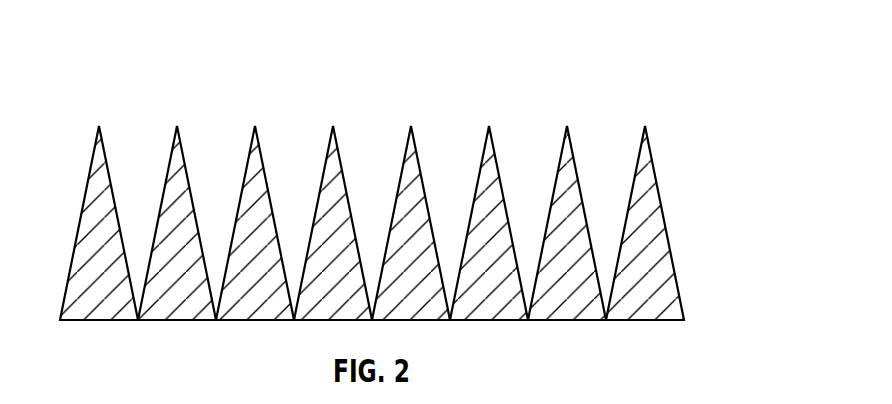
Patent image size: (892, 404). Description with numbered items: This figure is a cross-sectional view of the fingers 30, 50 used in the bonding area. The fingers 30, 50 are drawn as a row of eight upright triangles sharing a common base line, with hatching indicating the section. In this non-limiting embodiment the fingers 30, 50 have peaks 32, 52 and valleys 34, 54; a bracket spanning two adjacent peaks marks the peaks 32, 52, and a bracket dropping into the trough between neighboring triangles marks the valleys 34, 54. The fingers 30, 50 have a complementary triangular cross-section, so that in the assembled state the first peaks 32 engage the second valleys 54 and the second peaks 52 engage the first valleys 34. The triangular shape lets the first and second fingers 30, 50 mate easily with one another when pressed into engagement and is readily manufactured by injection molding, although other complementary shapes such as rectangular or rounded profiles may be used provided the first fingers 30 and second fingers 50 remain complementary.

The first fingers 30 is at (416, 173).
The second fingers 50 is at (660, 167).
The first peaks 32 is at (138, 173).
The second peaks 52 is at (177, 132).
The first valleys 34 is at (332, 181).
The second valleys 54 is at (292, 237).